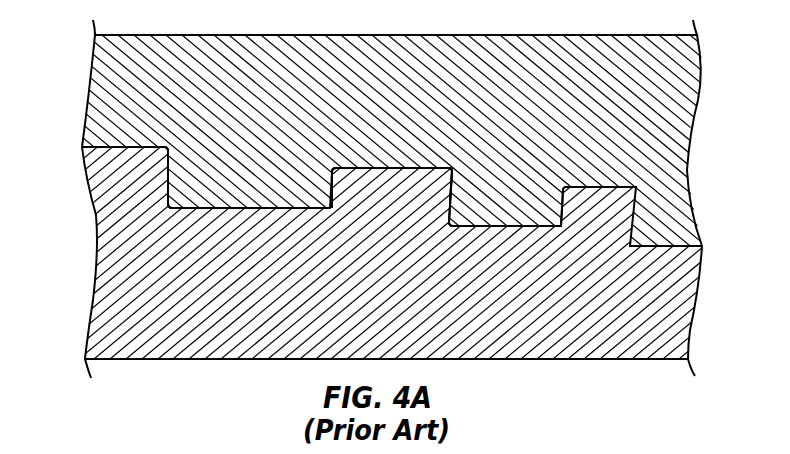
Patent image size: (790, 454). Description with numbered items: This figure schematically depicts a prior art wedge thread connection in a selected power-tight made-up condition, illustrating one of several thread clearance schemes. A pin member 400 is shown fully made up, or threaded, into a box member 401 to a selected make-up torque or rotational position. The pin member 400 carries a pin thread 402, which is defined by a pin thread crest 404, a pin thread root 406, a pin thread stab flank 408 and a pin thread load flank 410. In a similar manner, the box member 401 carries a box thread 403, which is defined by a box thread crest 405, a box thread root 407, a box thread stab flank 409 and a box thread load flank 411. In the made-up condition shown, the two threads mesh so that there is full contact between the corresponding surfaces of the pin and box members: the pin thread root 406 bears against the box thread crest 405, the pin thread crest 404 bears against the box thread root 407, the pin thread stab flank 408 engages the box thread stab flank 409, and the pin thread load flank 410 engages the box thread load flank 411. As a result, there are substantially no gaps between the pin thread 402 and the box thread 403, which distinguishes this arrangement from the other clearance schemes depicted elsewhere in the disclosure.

The pin member 400 is at (468, 286).
The box member 401 is at (516, 97).
The pin thread 402 is at (416, 197).
The box thread 403 is at (278, 195).
The pin thread crest 404 is at (447, 197).
The box thread crest 405 is at (208, 206).
The pin thread root 406 is at (251, 210).
The box thread root 407 is at (452, 192).
The pin thread stab flank 408 is at (168, 178).
The box thread stab flank 409 is at (172, 178).
The pin thread load flank 410 is at (334, 190).
The box thread load flank 411 is at (333, 188).